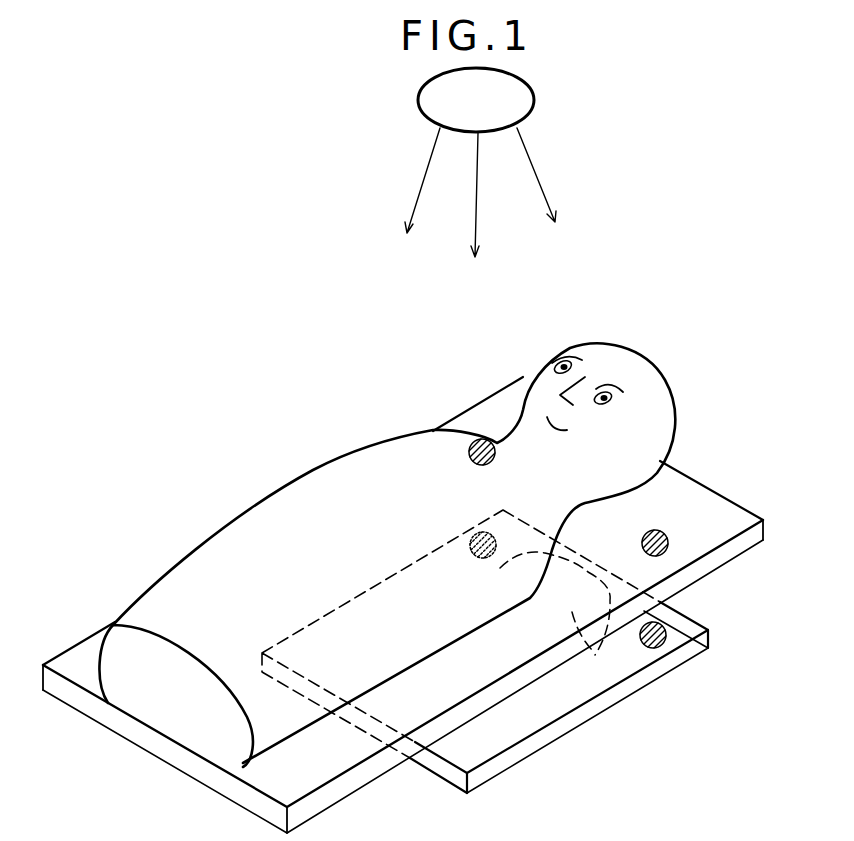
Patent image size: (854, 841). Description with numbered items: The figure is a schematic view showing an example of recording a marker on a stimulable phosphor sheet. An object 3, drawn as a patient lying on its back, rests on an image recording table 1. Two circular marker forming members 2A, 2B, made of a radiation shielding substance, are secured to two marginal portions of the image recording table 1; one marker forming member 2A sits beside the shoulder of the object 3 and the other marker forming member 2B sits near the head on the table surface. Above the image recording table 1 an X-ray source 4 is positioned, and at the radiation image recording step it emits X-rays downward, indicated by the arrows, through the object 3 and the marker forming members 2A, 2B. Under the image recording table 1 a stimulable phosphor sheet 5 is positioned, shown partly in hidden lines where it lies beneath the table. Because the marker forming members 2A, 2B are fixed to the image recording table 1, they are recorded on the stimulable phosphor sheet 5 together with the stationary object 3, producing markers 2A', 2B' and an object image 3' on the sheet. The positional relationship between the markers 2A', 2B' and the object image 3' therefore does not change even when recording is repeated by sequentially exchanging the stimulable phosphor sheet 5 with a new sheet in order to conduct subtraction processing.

The image recording table 1 is at (723, 556).
The marker forming member 2A is at (457, 424).
The marker 2A' is at (453, 520).
The marker forming member 2B is at (657, 525).
The marker 2B' is at (687, 620).
The object 3 is at (407, 555).
The object image 3' is at (564, 613).
The X-ray source 4 is at (527, 104).
The stimulable phosphor sheet 5 is at (707, 640).